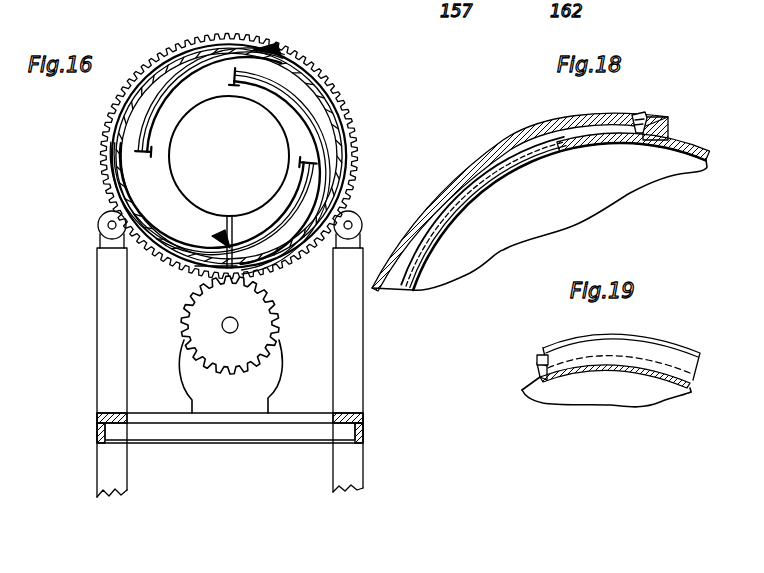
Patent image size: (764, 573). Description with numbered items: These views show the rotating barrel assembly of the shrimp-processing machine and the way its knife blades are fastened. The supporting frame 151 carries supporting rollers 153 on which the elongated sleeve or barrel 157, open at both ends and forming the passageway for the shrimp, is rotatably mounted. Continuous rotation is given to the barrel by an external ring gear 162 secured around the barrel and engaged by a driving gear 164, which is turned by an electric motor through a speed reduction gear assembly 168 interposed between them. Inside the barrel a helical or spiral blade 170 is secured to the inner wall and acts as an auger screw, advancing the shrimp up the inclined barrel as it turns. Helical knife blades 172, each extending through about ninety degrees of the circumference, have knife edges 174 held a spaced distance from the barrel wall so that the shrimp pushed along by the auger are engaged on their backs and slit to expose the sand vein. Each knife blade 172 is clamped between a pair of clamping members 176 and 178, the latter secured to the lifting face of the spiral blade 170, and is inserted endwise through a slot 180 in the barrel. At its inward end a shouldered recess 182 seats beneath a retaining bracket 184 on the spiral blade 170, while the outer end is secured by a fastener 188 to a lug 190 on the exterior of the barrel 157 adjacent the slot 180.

In FIG. 16, the supporting frame 151 is at (107, 358).
In FIG. 16, the supporting rollers 153 is at (98, 217).
In FIG. 18, the sleeve or barrel 157 is at (707, 155).
In FIG. 16, the external ring gear 162 is at (343, 94).
In FIG. 16, the driving gear 164 is at (253, 307).
In FIG. 16, the speed reduction gear assembly 168 is at (277, 380).
In FIG. 16, the helical or spiral blade 170 is at (207, 97).
In FIG. 18, the helical or spiral blade 170 is at (583, 210).
In FIG. 19, the helical or spiral blade 170 is at (550, 378).
In FIG. 18, the knife blade 172 is at (597, 123).
In FIG. 19, the knife blade 172 is at (668, 357).
In FIG. 19, the knife edge 174 is at (650, 337).
In FIG. 18, the clamping member 176 is at (403, 257).
In FIG. 18, the clamping member 178 is at (458, 227).
In FIG. 18, the slot 180 is at (517, 150).
In FIG. 19, the shouldered recess 182 is at (540, 370).
In FIG. 16, the retaining bracket 184 is at (228, 70).
In FIG. 19, the retaining bracket 184 is at (538, 358).
In FIG. 18, the fastener 188 is at (640, 112).
In FIG. 18, the lug 190 is at (668, 127).